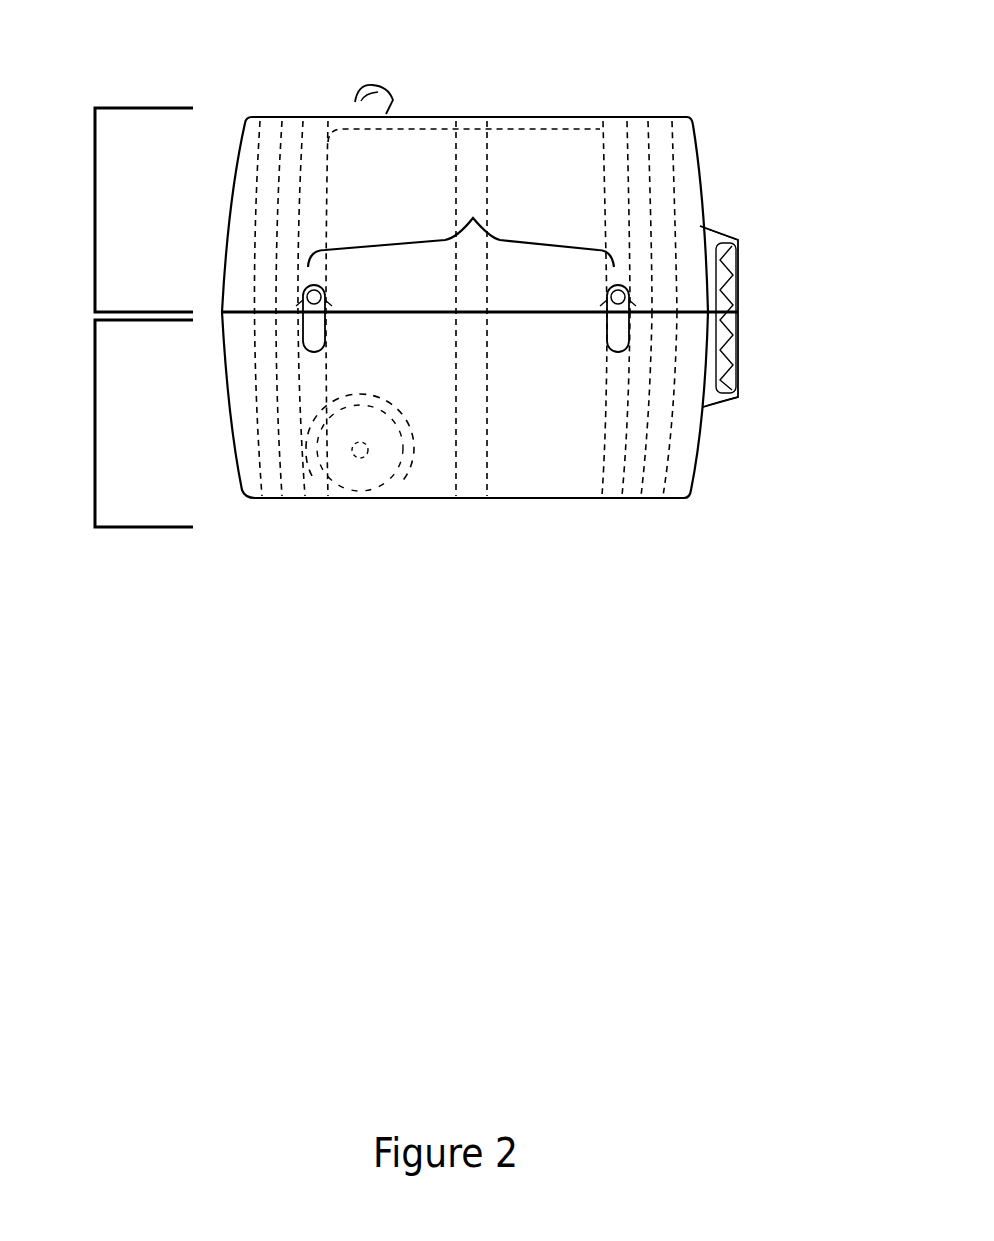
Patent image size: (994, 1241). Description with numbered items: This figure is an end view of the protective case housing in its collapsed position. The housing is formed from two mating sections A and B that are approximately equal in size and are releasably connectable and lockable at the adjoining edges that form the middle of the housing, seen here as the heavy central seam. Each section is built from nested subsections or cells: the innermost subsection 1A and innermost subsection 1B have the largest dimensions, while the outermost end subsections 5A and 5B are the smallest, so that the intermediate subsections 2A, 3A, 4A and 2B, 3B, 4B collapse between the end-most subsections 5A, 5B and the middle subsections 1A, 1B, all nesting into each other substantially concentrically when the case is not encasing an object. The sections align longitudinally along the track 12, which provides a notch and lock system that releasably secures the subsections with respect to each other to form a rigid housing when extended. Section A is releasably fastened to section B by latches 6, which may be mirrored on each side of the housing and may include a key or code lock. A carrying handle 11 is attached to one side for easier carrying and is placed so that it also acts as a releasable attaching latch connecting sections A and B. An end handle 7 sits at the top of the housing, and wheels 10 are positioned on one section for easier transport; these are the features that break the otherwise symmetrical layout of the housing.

The innermost subsection of section A 1A is at (687, 148).
The innermost subsection of section B 1B is at (680, 477).
The intermediate subsection of section A 2A is at (658, 146).
The intermediate subsection of section B 2B is at (650, 480).
The intermediate subsection of section A 3A is at (633, 145).
The intermediate subsection of section B 3B is at (630, 480).
The intermediate subsection of section A 4A is at (610, 145).
The intermediate subsection of section B 4B is at (610, 480).
The outermost end subsection of section A 5A is at (573, 145).
The outermost end subsection of section B 5B is at (569, 480).
The latch 6 is at (473, 198).
The end handle 7 is at (375, 72).
The wheels 10 is at (378, 468).
The carrying handle 11 is at (740, 312).
The track 12 is at (475, 150).
The housing section A is at (128, 210).
The housing section B is at (128, 423).